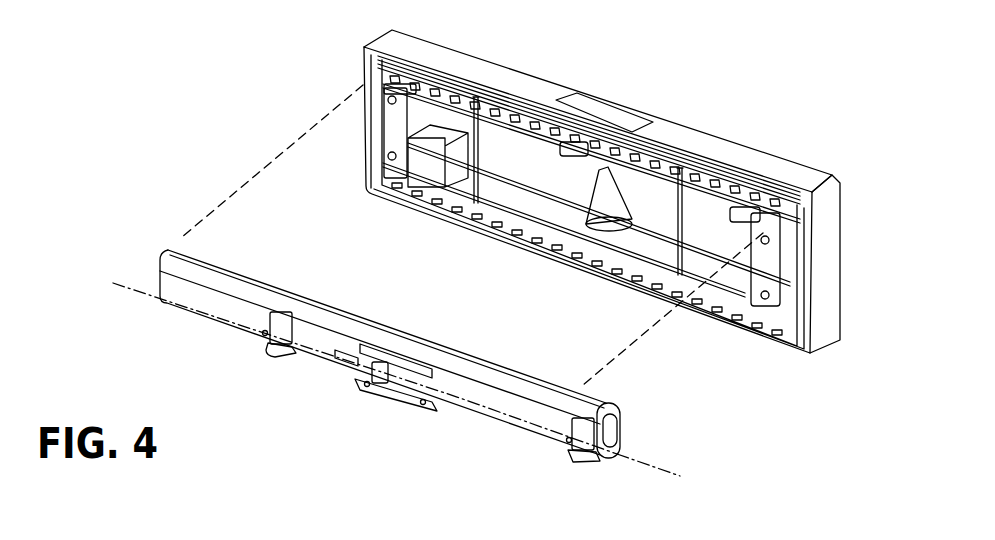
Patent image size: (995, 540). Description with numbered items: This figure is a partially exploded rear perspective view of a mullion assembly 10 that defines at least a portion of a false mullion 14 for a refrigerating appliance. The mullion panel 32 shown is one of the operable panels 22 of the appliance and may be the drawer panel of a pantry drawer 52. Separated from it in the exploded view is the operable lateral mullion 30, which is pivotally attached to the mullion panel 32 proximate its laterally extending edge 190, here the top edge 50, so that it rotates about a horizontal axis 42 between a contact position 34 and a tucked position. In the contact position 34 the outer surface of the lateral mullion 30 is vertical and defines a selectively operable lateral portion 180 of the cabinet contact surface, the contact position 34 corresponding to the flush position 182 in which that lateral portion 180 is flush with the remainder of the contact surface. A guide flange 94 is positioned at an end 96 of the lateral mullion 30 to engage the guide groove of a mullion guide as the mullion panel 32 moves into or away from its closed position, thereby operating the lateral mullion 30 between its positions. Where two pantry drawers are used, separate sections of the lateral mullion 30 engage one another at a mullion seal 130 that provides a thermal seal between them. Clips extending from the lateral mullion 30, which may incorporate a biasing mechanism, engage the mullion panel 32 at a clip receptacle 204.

The mullion assembly 10 is at (127, 311).
The false mullion 14 is at (233, 342).
The operable panel 22 is at (827, 337).
The lateral mullion 30 is at (530, 449).
The mullion panel 32 is at (698, 150).
The contact position 34 is at (642, 453).
The horizontal axis 42 is at (128, 286).
The top edge 50 is at (493, 87).
The pantry drawer 52 is at (348, 50).
The guide flange 94 is at (612, 430).
The end 96 is at (614, 482).
The mullion seal 130 is at (618, 445).
The selectively operable lateral portion 180 is at (388, 312).
The flush position 182 is at (547, 362).
The laterally extending edge 190 is at (543, 99).
The clip receptacle 204 is at (780, 197).